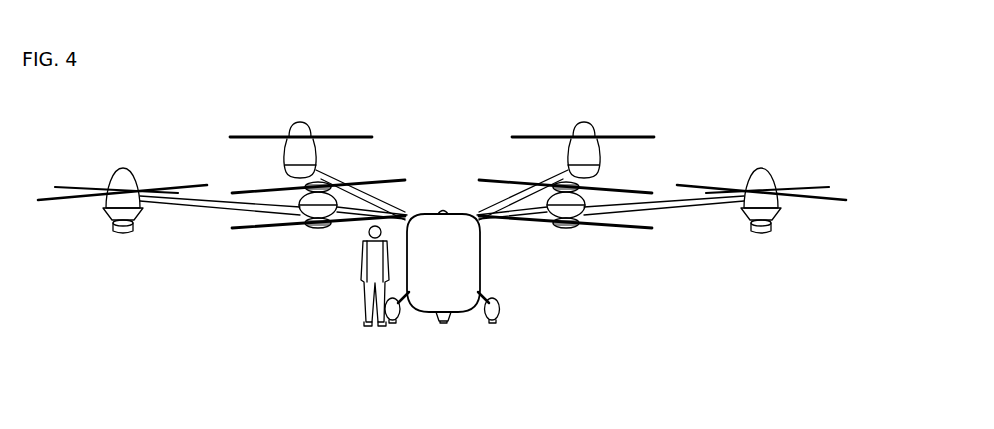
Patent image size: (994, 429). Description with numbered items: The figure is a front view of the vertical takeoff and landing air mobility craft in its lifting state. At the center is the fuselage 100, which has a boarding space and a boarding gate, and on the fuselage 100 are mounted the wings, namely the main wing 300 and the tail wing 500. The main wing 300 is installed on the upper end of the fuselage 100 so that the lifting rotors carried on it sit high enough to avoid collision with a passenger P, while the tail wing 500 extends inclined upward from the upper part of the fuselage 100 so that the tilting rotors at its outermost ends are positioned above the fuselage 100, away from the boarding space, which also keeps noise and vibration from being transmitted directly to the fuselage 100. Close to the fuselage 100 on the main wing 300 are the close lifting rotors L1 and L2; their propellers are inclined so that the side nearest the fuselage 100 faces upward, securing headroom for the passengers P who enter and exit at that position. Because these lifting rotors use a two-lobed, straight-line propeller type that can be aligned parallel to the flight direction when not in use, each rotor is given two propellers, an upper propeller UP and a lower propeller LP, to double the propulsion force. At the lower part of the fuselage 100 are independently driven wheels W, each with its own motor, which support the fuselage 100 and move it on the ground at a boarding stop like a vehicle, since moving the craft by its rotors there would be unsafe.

The fuselage 100 is at (477, 272).
The main wing 300 is at (678, 205).
The tail wing 500 is at (487, 208).
The upper propeller UP is at (243, 193).
The lower propeller LP is at (247, 228).
The close lifting rotor L1 is at (300, 207).
The close lifting rotor L2 is at (577, 215).
The passenger P is at (370, 267).
The wheel W is at (489, 320).